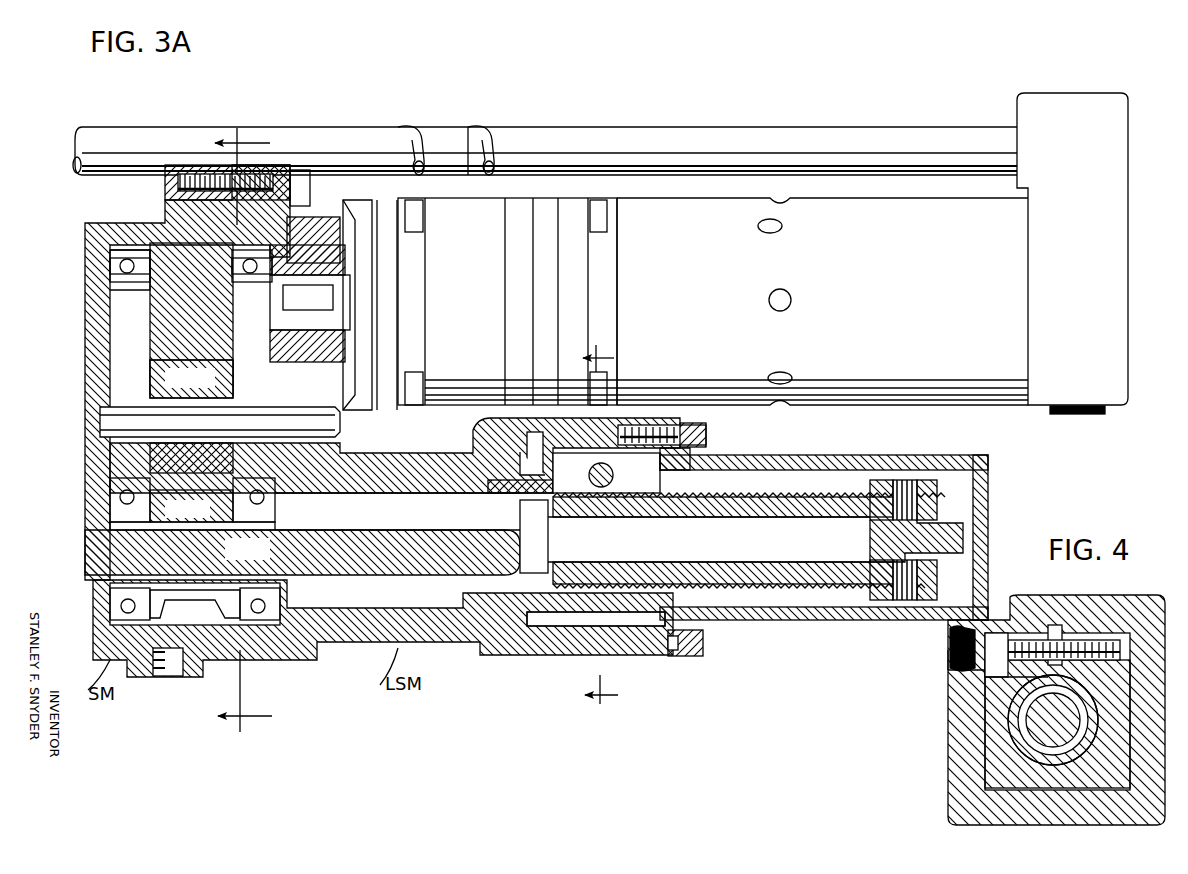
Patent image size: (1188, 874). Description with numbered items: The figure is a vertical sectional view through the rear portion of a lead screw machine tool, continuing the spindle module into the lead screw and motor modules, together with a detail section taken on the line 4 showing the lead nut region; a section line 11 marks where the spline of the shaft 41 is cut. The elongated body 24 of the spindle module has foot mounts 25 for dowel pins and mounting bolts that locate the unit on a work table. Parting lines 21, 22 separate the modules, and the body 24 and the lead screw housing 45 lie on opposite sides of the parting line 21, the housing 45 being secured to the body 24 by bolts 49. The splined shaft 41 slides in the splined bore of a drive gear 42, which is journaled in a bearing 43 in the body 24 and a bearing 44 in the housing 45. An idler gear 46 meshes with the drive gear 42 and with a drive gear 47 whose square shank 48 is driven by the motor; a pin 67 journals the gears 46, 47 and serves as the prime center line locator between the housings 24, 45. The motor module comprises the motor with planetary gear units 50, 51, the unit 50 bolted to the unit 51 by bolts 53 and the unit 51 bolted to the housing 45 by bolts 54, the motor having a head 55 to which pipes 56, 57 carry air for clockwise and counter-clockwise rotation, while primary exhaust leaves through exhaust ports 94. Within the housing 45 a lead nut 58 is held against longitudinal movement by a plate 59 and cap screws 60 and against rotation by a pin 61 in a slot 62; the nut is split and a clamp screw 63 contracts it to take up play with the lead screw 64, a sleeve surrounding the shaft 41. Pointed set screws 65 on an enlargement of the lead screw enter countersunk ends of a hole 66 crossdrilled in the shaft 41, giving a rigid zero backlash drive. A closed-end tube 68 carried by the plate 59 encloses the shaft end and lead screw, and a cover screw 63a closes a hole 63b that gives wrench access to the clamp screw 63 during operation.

In FIG. 3A, the section line 4- 4 is at (600, 526).
In FIG. 3A, the section line 11- 11 is at (252, 430).
In FIG. 3A, the parting line 21 is at (185, 212).
In FIG. 3A, the parting line 22 is at (338, 210).
In FIG. 3A, the elongated body 24 is at (90, 232).
In FIG. 3A, the foot mounts 25 is at (162, 672).
In FIG. 3A, the shaft 41 is at (258, 559).
In FIG. 4, the shaft 41 is at (1033, 716).
In FIG. 3A, the drive gear 42 is at (198, 519).
In FIG. 3A, the bearing 43 is at (110, 612).
In FIG. 3A, the bearing 44 is at (283, 497).
In FIG. 3A, the lead screw housing 45 is at (336, 452).
In FIG. 4, the lead screw housing 45 is at (950, 690).
In FIG. 3A, the idler gear 46 is at (200, 389).
In FIG. 3A, the drive gear 47 is at (160, 262).
In FIG. 3A, the square shank 48 is at (313, 308).
In FIG. 3A, the bolts 49 is at (300, 165).
In FIG. 3A, the planetary gear unit 50 is at (672, 303).
In FIG. 3A, the planetary gear unit 51 is at (472, 301).
In FIG. 3A, the bolts 53 is at (610, 220).
In FIG. 3A, the bolts 54 is at (426, 410).
In FIG. 3A, the head 55 is at (1080, 279).
In FIG. 3A, the pipe 56 is at (516, 130).
In FIG. 3A, the pipe 57 is at (452, 126).
In FIG. 3A, the lead nut 58 is at (570, 608).
In FIG. 4, the lead nut 58 is at (1000, 757).
In FIG. 3A, the plate 59 is at (682, 640).
In FIG. 3A, the cap screws 60 is at (710, 438).
In FIG. 3A, the pin 61 is at (527, 446).
In FIG. 4, the pin 61 is at (1055, 628).
In FIG. 3A, the slot 62 is at (520, 470).
In FIG. 4, the slot 62 is at (950, 702).
In FIG. 3A, the clamp screw 63 is at (613, 474).
In FIG. 4, the clamp screw 63 is at (1090, 640).
In FIG. 4, the cover screw 63a is at (960, 668).
In FIG. 4, the hole 63b is at (952, 648).
In FIG. 3A, the lead screw 64 is at (775, 500).
In FIG. 4, the lead screw 64 is at (1010, 700).
In FIG. 3A, the pointed set screws 65 is at (908, 482).
In FIG. 3A, the hole 66 is at (943, 538).
In FIG. 3A, the pin 67 is at (224, 429).
In FIG. 3A, the closed-end tube 68 is at (790, 620).
In FIG. 3A, the exhaust ports 94 is at (786, 372).